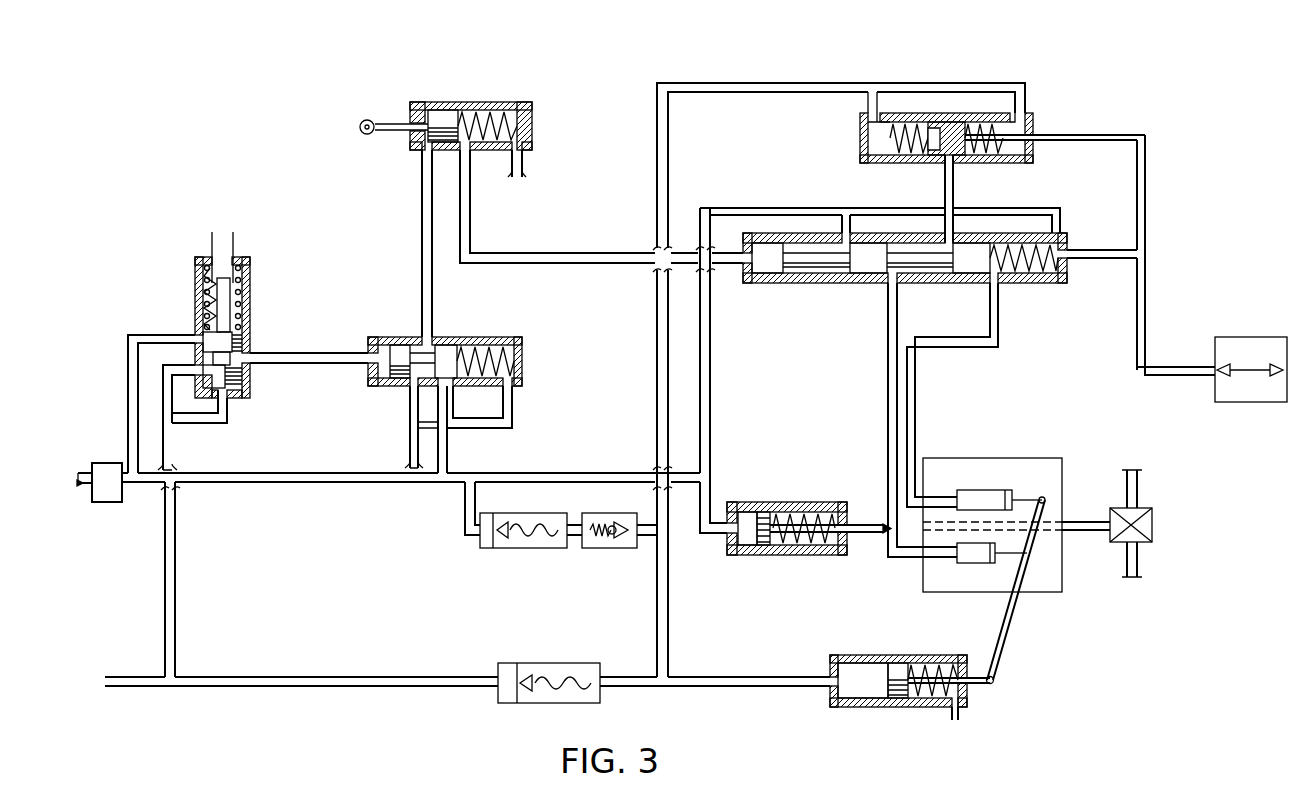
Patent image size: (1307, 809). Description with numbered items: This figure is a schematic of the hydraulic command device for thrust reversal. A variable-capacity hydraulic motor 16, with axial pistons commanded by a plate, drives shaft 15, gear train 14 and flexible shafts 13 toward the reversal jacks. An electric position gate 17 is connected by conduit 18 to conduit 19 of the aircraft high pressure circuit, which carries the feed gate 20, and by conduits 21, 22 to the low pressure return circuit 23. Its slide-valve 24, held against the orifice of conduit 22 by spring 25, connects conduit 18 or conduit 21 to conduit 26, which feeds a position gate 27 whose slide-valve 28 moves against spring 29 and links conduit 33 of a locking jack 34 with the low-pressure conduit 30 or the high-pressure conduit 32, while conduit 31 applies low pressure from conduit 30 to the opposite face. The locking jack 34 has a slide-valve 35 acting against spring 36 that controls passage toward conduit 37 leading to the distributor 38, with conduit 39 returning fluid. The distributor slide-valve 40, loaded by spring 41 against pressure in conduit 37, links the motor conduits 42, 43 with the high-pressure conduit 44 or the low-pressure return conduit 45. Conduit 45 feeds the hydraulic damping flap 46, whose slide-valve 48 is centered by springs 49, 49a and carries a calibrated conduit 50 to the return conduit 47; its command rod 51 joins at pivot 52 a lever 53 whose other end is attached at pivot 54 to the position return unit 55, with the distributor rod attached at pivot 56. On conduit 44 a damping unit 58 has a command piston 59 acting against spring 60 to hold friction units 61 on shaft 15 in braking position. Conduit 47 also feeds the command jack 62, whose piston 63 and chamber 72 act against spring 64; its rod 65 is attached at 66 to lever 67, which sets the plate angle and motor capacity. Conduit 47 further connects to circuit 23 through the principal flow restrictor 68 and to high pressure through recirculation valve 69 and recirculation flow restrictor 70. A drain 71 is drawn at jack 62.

The flexible shafts 13 is at (1137, 490).
The gear train 14 is at (1152, 525).
The shaft 15 is at (1082, 522).
The hydraulic motor 16 is at (982, 470).
The electric position gate 17 is at (226, 310).
The conduit 18 is at (160, 335).
The conduit 19 is at (82, 484).
The feed gate 20 is at (115, 502).
The conduit 21 is at (163, 400).
The conduit 22 is at (200, 423).
The low pressure fluid return circuit 23 is at (263, 677).
The slide-valve 24 is at (250, 345).
The spring 25 is at (207, 268).
The conduit 26 is at (316, 363).
The position gate 27 is at (464, 341).
The slide-valve 28 is at (445, 345).
The spring 29 is at (515, 350).
The low-pressure conduit 30 is at (410, 410).
The conduit 31 is at (512, 400).
The high-pressure conduit 32 is at (447, 450).
The conduit 33 is at (422, 210).
The locking jack 34 is at (447, 102).
The slide-valve 35 is at (442, 112).
The spring 36 is at (490, 112).
The conduit 37 is at (555, 263).
The distributor 38 is at (745, 240).
The conduit 39 is at (522, 172).
The slide-valve 40 is at (905, 275).
The spring 41 is at (1025, 283).
The conduit 42 is at (888, 330).
The conduit 43 is at (990, 310).
The conduit 44 is at (792, 208).
The low-pressure return conduit 45 is at (955, 190).
The hydraulic damping flap 46 is at (973, 128).
The conduit 47 is at (715, 83).
The slide-valve 48 is at (940, 125).
The spring 49 is at (905, 125).
The spring 49a is at (985, 120).
The calibrated conduit 50 is at (930, 150).
The command rod 51 is at (1095, 140).
The pivot 52 is at (1142, 135).
The lever 53 is at (1147, 208).
The pivot 54 is at (1135, 365).
The unit controlling return to position 55 is at (1250, 337).
The pivot 56 is at (1147, 255).
The damping unit 58 is at (809, 540).
The command piston 59 is at (745, 555).
The spring 60 is at (838, 555).
The friction units 61 is at (808, 555).
The command jack 62 is at (894, 687).
The piston 63 is at (898, 707).
The spring 64 is at (930, 663).
The rod 65 is at (980, 690).
The attachment point 66 is at (995, 685).
The lever 67 is at (1010, 645).
The principal flow restrictor 68 is at (548, 663).
The recirculation valve 69 is at (608, 548).
The recirculation flow restrictor 70 is at (510, 548).
The drain 71 is at (955, 720).
The chamber 72 is at (855, 698).